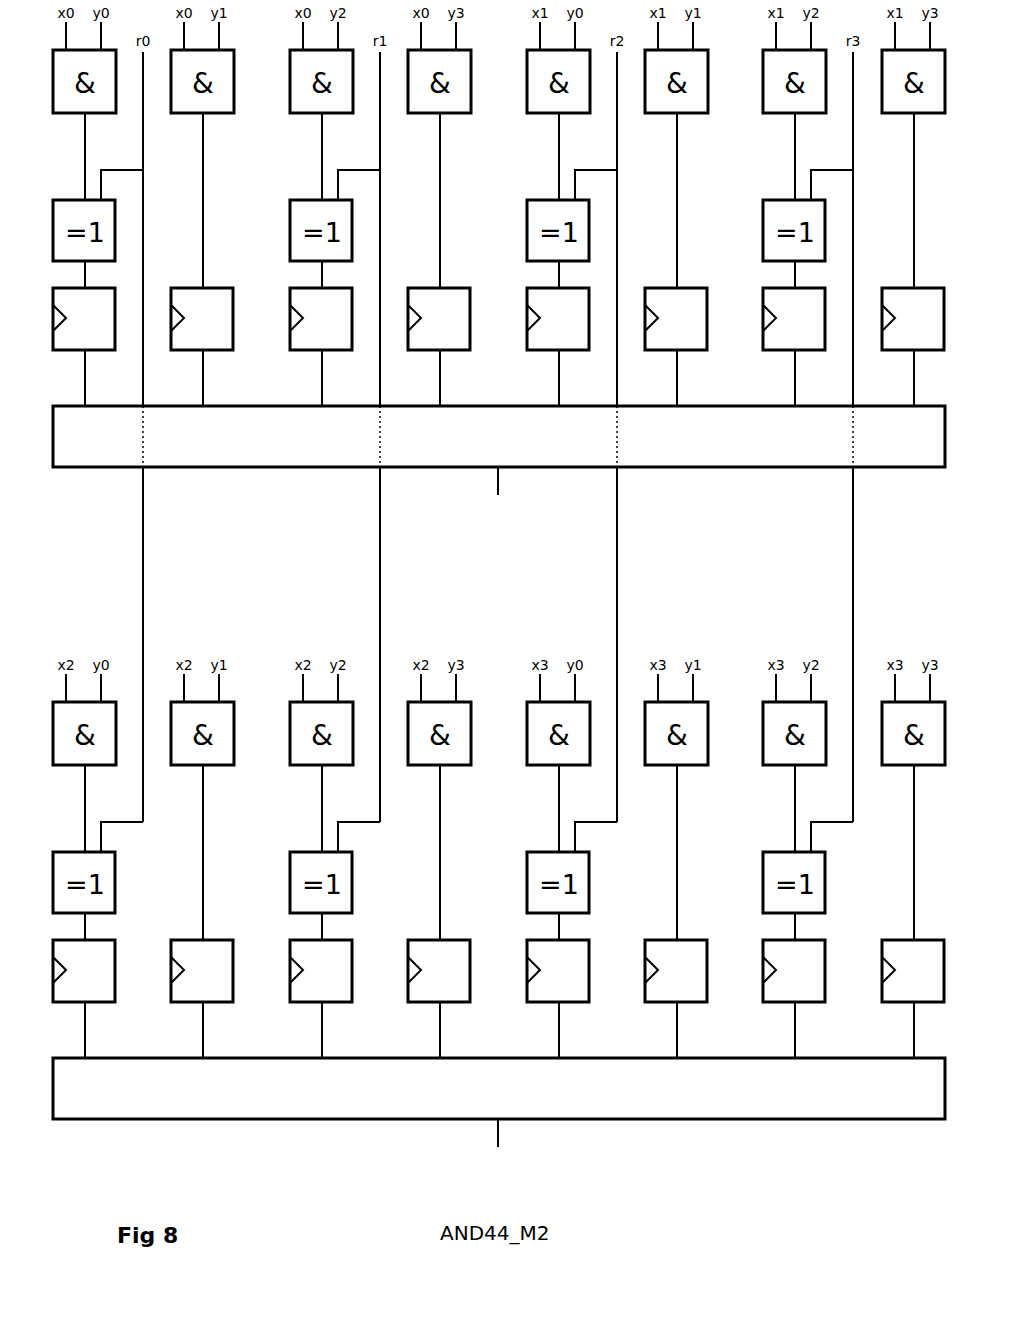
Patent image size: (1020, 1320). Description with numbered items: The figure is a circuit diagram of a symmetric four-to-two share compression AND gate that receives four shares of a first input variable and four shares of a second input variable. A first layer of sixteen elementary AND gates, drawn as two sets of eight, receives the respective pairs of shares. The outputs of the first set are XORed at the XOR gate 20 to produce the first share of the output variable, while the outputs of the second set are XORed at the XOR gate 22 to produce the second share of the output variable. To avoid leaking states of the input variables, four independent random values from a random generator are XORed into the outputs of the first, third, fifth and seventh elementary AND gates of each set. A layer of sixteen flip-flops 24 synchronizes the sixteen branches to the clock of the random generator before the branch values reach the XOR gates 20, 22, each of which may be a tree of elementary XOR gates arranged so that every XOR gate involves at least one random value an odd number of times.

The XOR gate 20 is at (66, 451).
The XOR gate 22 is at (66, 1103).
The flip-flops 24 is at (88, 337).